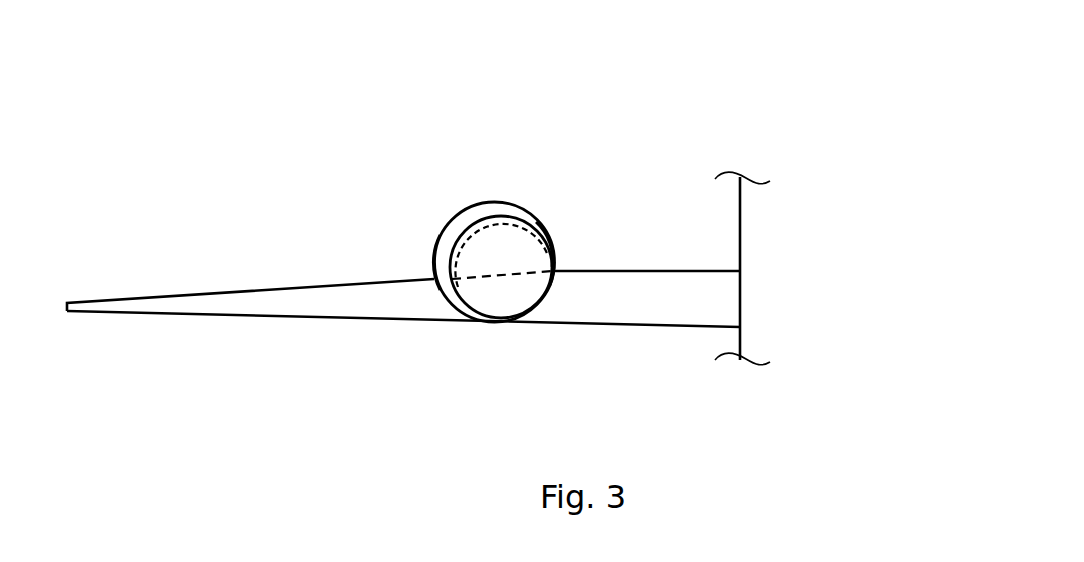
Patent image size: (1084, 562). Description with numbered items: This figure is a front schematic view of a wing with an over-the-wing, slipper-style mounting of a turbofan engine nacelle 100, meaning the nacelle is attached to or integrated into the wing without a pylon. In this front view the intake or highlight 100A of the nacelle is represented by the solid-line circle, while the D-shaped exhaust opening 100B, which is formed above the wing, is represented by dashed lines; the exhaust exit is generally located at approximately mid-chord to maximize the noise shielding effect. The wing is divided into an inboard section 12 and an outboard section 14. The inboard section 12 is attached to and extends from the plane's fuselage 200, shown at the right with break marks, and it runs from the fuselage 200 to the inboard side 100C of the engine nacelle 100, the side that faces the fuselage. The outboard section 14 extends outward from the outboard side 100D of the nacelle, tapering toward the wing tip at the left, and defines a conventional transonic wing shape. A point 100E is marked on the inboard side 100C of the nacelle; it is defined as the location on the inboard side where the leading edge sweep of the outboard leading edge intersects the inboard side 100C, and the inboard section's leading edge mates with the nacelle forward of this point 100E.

The inboard section 12 is at (662, 310).
The outboard section 14 is at (175, 303).
The turbofan engine nacelle 100 is at (487, 202).
The intake or highlight 100A is at (462, 227).
The D-shaped exhaust opening 100B is at (503, 218).
The inboard side 100C is at (547, 233).
The outboard side 100D is at (435, 263).
The point 100E is at (553, 272).
The fuselage 200 is at (740, 230).